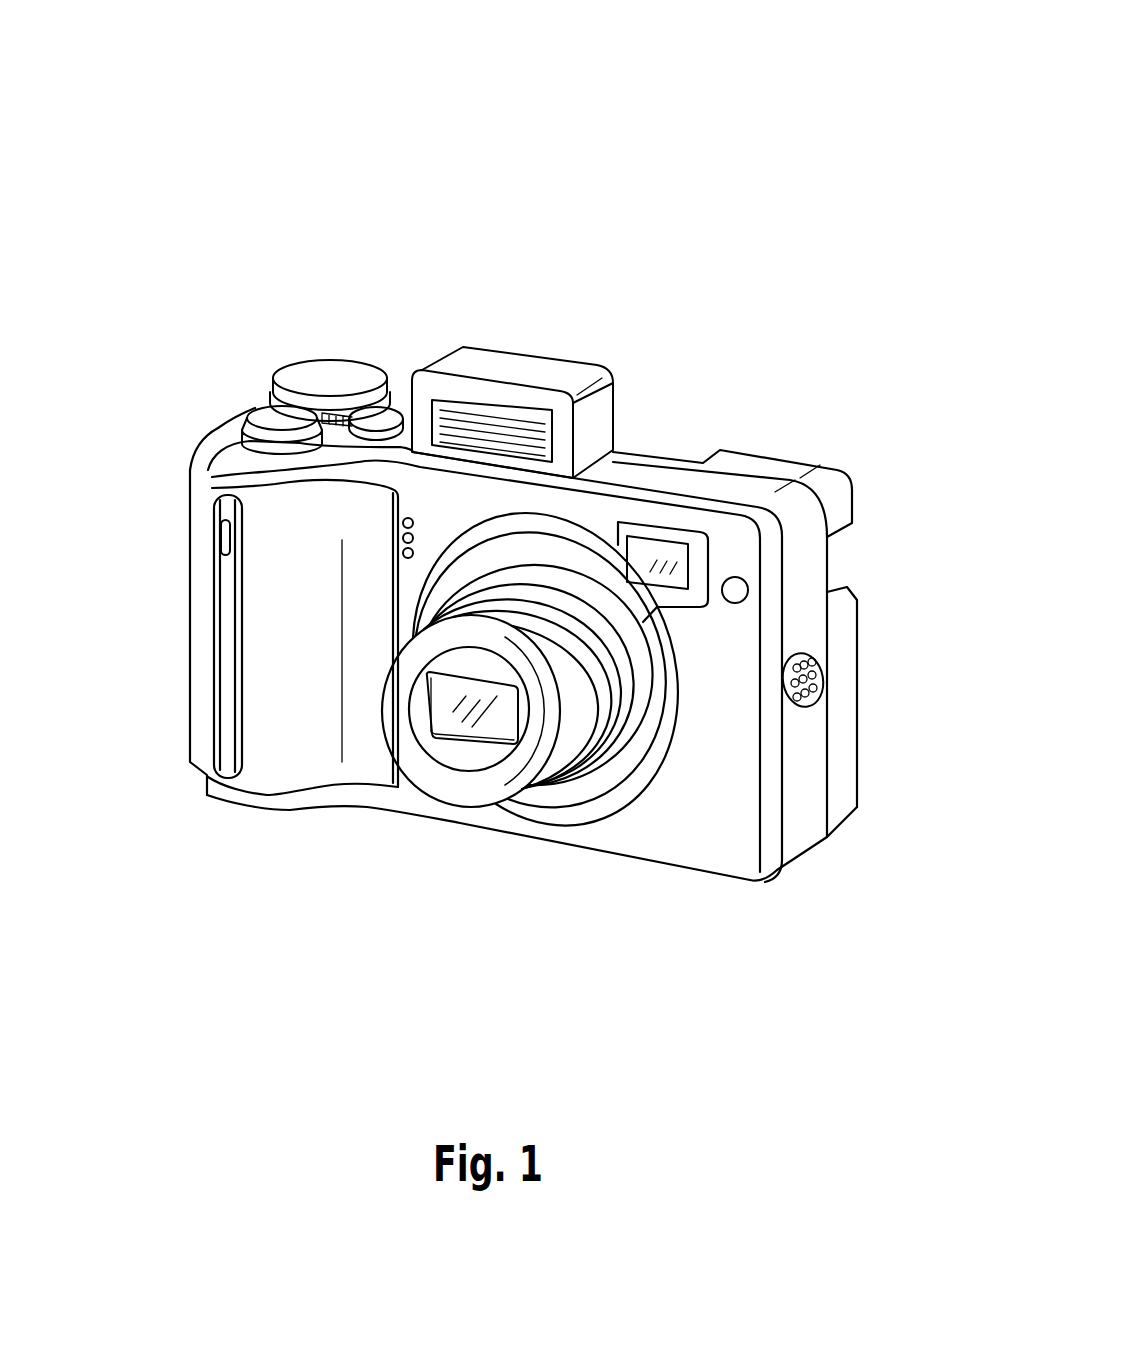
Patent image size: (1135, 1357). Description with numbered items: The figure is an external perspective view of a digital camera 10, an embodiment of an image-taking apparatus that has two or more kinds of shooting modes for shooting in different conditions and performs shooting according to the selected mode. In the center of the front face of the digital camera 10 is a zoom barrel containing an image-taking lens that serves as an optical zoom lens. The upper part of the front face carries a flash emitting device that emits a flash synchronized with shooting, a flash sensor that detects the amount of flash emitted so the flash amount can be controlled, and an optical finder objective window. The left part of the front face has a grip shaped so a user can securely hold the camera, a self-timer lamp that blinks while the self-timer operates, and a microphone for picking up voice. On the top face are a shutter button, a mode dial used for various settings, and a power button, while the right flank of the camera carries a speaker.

The digital camera 10 is at (523, 645).